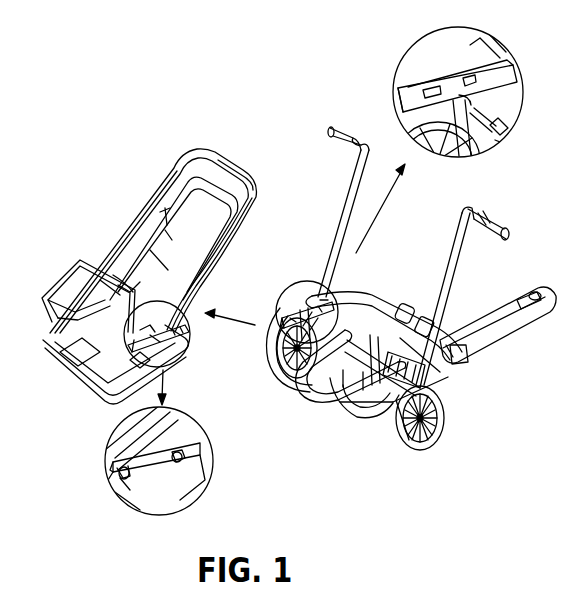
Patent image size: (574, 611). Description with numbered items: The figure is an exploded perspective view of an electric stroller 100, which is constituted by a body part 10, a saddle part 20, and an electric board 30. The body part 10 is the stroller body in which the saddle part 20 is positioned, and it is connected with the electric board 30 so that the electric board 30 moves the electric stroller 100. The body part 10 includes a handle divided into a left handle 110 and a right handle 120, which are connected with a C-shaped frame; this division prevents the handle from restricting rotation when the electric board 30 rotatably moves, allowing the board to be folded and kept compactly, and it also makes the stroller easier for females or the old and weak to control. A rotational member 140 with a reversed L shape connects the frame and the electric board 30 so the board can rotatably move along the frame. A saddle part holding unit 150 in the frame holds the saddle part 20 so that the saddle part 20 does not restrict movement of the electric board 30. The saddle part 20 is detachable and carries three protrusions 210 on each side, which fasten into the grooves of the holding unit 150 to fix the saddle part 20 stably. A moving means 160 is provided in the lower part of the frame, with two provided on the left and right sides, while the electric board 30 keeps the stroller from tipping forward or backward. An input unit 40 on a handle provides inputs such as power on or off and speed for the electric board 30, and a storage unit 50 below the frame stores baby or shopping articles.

The electric stroller 100 is at (86, 62).
The body part 10 is at (367, 286).
The saddle part 20 is at (152, 201).
The electric board 30 is at (490, 327).
The input unit 40 is at (352, 130).
The storage unit 50 is at (313, 395).
The left handle 110 is at (461, 258).
The right handle 120 is at (350, 196).
The rotational member 140 is at (404, 312).
The saddle part holding unit 150 is at (287, 294).
The moving means 160 is at (446, 429).
The protrusion 210 is at (113, 461).